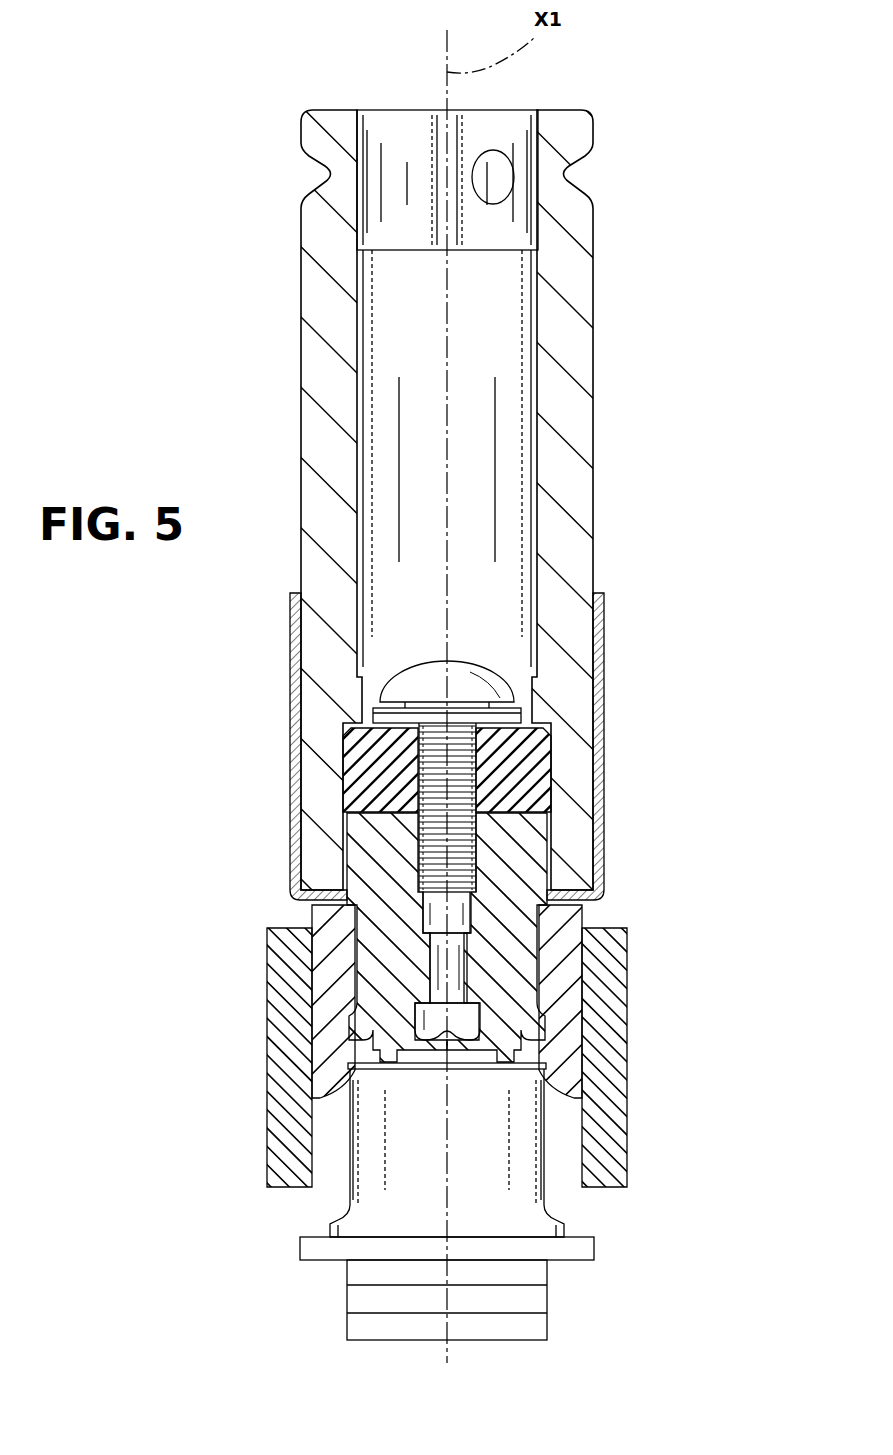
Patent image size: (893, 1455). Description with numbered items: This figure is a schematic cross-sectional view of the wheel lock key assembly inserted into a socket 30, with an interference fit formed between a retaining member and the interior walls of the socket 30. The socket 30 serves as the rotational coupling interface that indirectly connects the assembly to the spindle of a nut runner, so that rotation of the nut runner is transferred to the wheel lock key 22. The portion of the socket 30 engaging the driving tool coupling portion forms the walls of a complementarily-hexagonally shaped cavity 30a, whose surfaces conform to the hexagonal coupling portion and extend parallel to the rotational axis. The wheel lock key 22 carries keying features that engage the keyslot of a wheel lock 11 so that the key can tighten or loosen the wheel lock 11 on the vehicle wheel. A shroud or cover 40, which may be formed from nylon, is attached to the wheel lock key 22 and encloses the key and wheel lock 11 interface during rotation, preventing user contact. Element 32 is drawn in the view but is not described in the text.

The socket 30 is at (578, 568).
The hexagonally shaped cavity 30a is at (552, 857).
The insert block 32 is at (378, 779).
The wheel lock key 22 is at (329, 991).
The cover 40 is at (632, 973).
The wheel lock 11 is at (566, 1207).